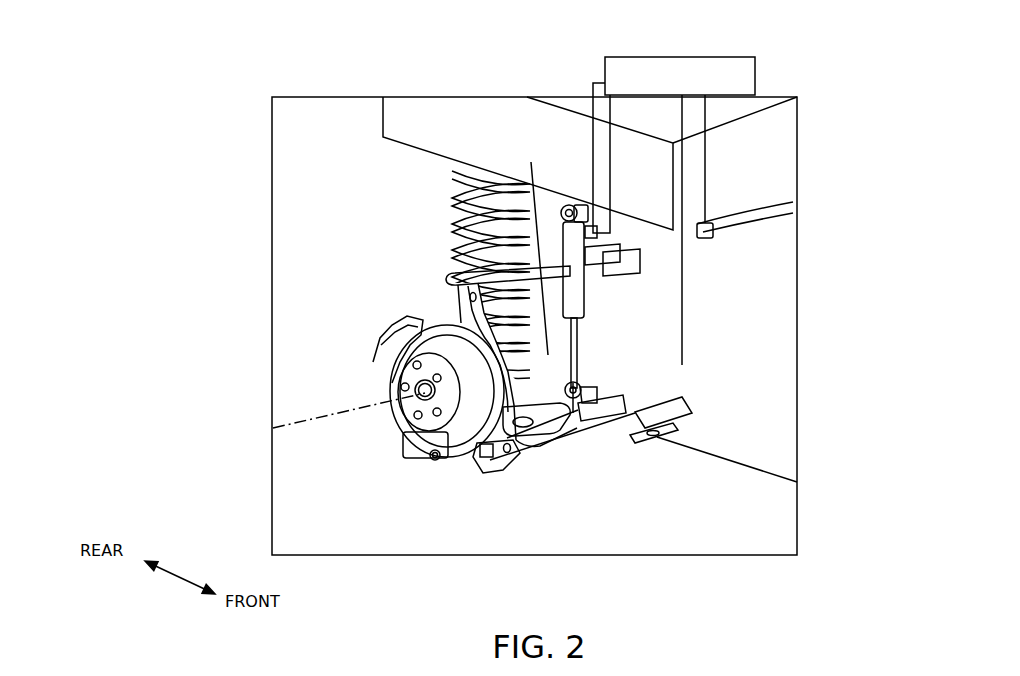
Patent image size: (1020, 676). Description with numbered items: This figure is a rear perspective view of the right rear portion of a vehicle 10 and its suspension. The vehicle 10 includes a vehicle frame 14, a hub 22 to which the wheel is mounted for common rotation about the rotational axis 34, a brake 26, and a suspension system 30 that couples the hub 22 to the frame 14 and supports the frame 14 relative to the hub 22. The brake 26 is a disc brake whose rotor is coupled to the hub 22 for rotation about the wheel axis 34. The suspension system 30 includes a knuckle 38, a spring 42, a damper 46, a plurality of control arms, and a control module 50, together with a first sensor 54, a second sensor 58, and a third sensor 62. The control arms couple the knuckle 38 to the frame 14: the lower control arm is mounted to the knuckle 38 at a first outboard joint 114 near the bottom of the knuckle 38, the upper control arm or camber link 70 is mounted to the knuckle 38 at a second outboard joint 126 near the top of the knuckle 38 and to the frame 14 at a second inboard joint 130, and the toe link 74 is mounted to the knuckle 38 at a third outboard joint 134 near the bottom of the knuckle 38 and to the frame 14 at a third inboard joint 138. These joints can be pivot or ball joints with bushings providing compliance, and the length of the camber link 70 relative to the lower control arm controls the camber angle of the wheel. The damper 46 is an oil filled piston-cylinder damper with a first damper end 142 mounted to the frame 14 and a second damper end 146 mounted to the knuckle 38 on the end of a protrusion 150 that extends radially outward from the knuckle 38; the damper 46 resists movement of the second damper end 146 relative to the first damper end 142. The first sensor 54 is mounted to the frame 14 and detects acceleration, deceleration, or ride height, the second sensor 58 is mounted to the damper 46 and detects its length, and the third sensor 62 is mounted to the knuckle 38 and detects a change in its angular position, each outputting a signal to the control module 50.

The vehicle 10 is at (312, 149).
The vehicle frame 14 is at (790, 128).
The hub 22 is at (403, 407).
The brake 26 is at (393, 378).
The suspension system 30 is at (418, 199).
The rotational axis of the wheel 34 is at (300, 419).
The knuckle 38 is at (497, 383).
The spring 42 is at (462, 172).
The damper 46 is at (597, 300).
The control module 50 is at (723, 57).
The first sensor 54 is at (793, 217).
The second sensor 58 is at (593, 233).
The third sensor 62 is at (600, 385).
The camber link 70 is at (467, 262).
The toe link 74 is at (558, 448).
The first outboard joint 114 is at (413, 450).
The second outboard joint 126 is at (443, 285).
The second inboard joint 130 is at (640, 262).
The third outboard joint 134 is at (515, 402).
The third inboard joint 138 is at (682, 430).
The first damper end 142 is at (577, 204).
The second damper end 146 is at (575, 403).
The protrusion 150 is at (530, 383).